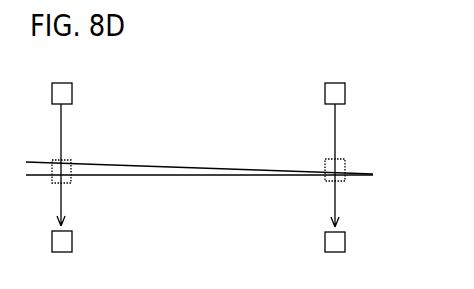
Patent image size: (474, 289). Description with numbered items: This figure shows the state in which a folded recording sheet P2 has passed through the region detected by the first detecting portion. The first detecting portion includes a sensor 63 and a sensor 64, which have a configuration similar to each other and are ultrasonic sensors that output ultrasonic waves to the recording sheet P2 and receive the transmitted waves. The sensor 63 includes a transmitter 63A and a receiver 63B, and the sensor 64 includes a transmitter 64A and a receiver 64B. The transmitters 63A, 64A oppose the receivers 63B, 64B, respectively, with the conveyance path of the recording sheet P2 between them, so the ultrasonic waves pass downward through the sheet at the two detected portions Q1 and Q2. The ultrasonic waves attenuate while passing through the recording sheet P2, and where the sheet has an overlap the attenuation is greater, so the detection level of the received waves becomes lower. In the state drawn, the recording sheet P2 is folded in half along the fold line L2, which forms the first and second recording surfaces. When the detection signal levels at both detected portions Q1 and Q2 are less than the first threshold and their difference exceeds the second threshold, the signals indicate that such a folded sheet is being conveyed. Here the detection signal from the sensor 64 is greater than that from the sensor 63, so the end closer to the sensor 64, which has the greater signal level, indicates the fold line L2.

The sensor 63 is at (70, 160).
The transmitter 63A is at (73, 95).
The receiver 63B is at (73, 243).
The sensor 64 is at (330, 161).
The transmitter 64A is at (324, 95).
The receiver 64B is at (324, 243).
The detected portion Q1 is at (70, 164).
The detected portion Q2 is at (346, 163).
The recording sheet P2 is at (198, 168).
The fold line L2 is at (384, 181).